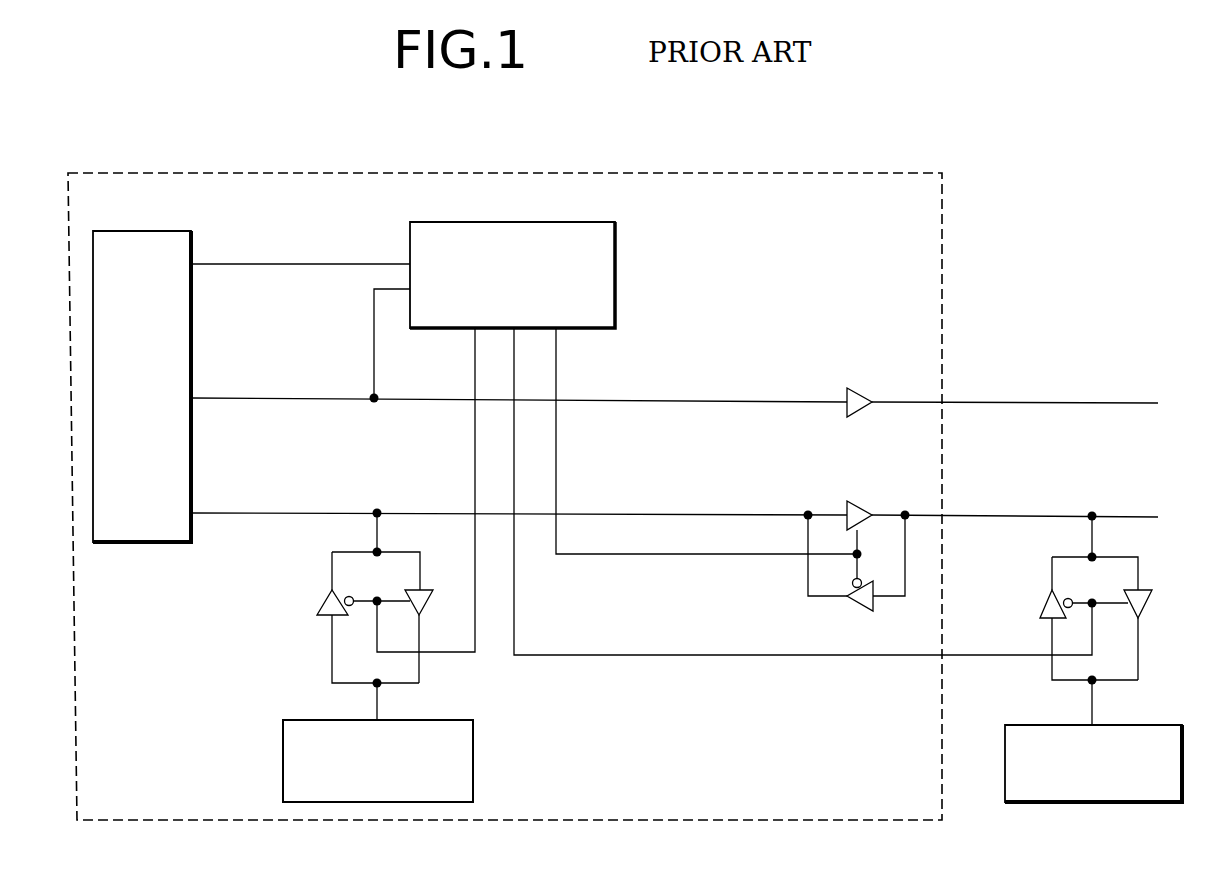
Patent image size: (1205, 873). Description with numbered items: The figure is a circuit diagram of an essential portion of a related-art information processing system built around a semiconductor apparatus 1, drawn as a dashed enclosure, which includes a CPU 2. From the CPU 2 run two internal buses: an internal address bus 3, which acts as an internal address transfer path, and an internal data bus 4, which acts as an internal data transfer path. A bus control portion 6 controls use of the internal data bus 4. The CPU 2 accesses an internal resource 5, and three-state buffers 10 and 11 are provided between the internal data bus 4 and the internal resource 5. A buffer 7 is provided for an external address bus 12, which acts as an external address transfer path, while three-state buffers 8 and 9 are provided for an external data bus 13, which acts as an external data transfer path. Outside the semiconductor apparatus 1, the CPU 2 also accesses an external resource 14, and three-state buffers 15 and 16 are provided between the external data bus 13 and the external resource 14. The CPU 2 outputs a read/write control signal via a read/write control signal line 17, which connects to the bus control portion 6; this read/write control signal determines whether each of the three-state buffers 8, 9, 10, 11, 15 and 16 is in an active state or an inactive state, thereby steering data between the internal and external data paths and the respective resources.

The semiconductor apparatus 1 is at (84, 820).
The CPU 2 is at (146, 544).
The internal address bus 3 is at (585, 400).
The internal data bus 4 is at (585, 513).
The internal resource 5 is at (474, 766).
The bus control portion 6 is at (616, 283).
The buffer 7 is at (856, 392).
The three-state buffer 8 is at (858, 505).
The three-state buffer 9 is at (862, 610).
The three-state buffer 10 is at (434, 601).
The three-state buffer 11 is at (320, 606).
The external address bus 12 is at (965, 403).
The external data bus 13 is at (965, 517).
The external resource 14 is at (1030, 804).
The three-state buffer 15 is at (1153, 604).
The three-state buffer 16 is at (1042, 607).
The read/write control signal line 17 is at (290, 263).